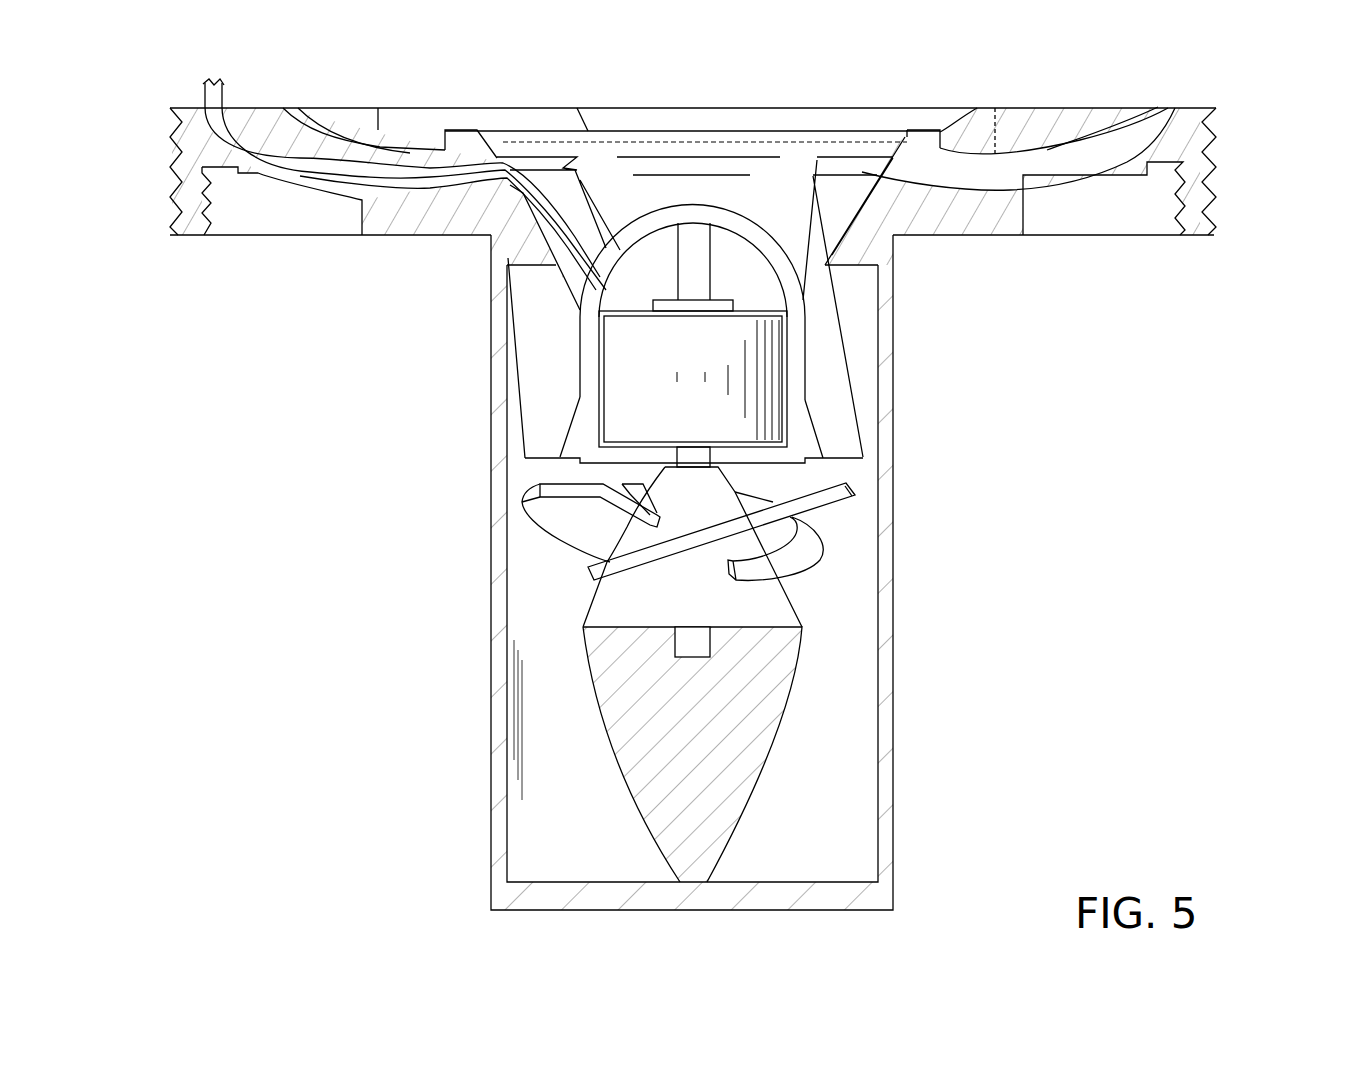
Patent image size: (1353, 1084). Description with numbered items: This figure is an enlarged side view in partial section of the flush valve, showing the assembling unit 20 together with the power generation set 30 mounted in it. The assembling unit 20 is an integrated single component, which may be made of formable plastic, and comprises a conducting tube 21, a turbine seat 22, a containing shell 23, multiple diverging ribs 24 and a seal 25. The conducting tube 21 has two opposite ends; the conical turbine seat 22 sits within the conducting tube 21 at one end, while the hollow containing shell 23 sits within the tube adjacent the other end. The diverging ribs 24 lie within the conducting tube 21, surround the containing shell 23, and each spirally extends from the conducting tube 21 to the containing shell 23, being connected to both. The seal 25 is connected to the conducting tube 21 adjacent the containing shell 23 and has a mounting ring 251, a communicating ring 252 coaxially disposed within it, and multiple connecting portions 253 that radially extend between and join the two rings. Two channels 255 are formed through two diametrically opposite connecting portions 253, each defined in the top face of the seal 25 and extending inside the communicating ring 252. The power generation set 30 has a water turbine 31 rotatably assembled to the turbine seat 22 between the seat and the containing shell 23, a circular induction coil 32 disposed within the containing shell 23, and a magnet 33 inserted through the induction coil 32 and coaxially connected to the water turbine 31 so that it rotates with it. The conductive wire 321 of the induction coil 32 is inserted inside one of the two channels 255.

The assembling unit 20 is at (940, 818).
The conducting tube 21 is at (890, 768).
The turbine seat 22 is at (664, 778).
The containing shell 23 is at (728, 222).
The diverging ribs 24 is at (598, 176).
The seal 25 is at (705, 262).
The mounting ring 251 is at (185, 216).
The communicating ring 252 is at (464, 135).
The connecting portions 253 is at (1072, 128).
The channels 255 is at (1043, 180).
The power generation set 30 is at (699, 565).
The water turbine 31 is at (553, 523).
The induction coil 32 is at (695, 371).
The magnet 33 is at (735, 306).
The conductive wire 321 is at (206, 93).